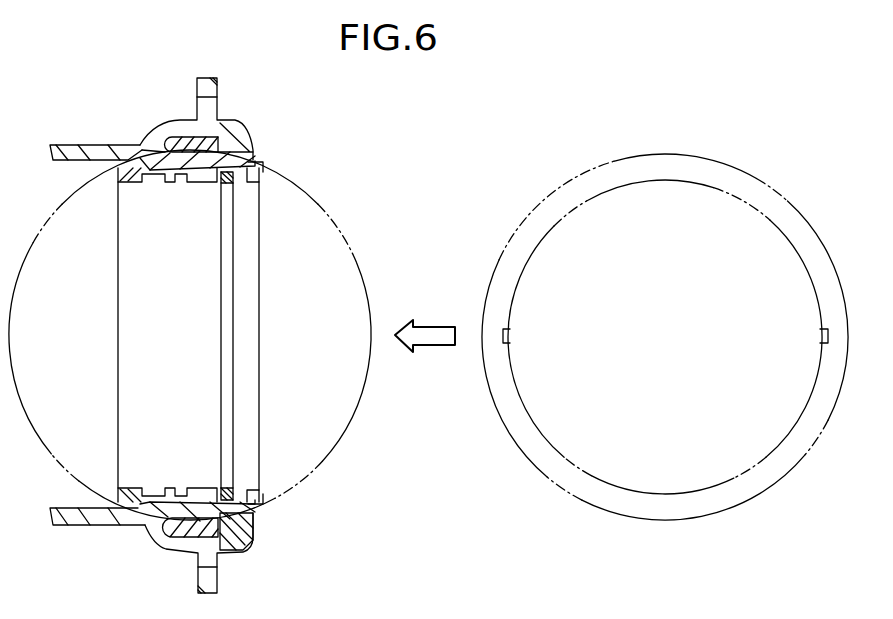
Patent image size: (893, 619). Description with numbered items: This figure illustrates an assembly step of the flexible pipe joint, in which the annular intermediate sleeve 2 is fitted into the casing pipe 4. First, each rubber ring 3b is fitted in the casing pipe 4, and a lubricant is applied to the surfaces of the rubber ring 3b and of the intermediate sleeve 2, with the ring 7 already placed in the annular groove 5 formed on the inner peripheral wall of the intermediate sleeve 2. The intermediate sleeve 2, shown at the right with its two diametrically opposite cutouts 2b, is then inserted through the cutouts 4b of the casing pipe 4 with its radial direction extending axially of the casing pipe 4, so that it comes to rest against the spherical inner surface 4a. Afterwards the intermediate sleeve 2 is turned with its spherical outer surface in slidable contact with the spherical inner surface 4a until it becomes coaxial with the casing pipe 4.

The intermediate sleeve 2 is at (48, 452).
The cutouts 2b is at (512, 335).
The rubber ring 3b is at (183, 138).
The casing pipe 4 is at (75, 145).
The spherical inner surface 4a is at (144, 172).
The cutouts 4b is at (248, 157).
The annular groove 5 is at (215, 176).
The ring 7 is at (221, 494).